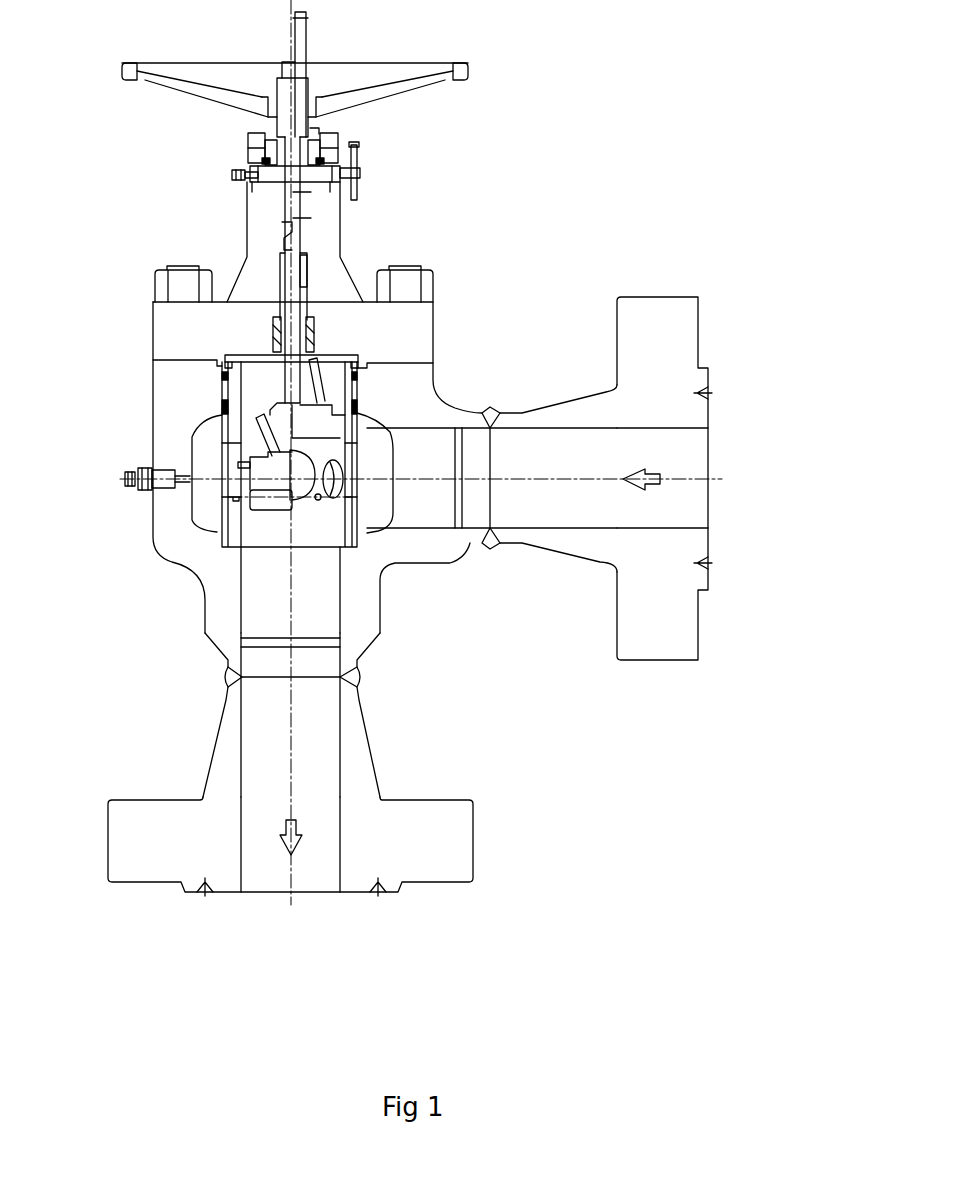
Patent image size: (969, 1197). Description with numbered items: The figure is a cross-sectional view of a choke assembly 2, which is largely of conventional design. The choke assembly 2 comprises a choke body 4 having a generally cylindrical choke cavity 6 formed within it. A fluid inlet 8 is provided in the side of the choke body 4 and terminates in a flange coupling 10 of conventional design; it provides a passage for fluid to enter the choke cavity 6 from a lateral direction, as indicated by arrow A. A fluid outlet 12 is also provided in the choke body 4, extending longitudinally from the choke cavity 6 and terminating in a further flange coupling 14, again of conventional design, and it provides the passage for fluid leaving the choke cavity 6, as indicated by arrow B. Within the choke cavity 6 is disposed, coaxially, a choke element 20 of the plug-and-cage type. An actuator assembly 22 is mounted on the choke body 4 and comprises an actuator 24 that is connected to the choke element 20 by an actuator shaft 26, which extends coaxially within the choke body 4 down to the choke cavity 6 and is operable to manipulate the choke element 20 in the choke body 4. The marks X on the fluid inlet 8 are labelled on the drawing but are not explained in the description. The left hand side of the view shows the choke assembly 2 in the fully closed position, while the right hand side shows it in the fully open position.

The choke assembly 2 is at (411, 452).
The choke body 4 is at (173, 423).
The choke cavity 6 is at (190, 453).
The fluid inlet 8 is at (533, 432).
The flange coupling 10 is at (677, 335).
The fluid outlet 12 is at (345, 699).
The flange coupling 14 is at (460, 847).
The choke element 20 is at (363, 390).
The actuator assembly 22 is at (315, 207).
The actuator 24 is at (295, 148).
The actuator shaft 26 is at (287, 246).
The arrow A is at (648, 482).
The arrow B is at (287, 822).
The section line X is at (495, 408).